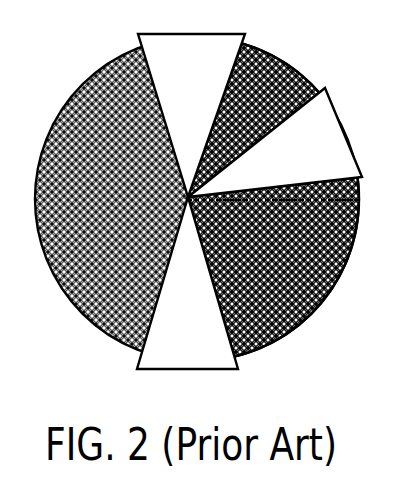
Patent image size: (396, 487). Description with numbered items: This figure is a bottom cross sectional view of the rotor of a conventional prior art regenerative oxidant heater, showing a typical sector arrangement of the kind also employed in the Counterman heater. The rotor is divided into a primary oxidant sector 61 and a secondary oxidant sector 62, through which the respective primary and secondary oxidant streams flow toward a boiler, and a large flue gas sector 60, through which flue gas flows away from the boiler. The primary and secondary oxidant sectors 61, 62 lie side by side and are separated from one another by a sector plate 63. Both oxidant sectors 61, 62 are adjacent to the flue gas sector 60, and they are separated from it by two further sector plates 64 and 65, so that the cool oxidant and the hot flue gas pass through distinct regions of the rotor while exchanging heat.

The flue gas sector 60 is at (197, 199).
The primary oxidant sector 61 is at (253, 120).
The secondary oxidant sector 62 is at (273, 267).
The sector plate 63 is at (275, 142).
The sector plate 64 is at (187, 283).
The sector plate 65 is at (191, 115).